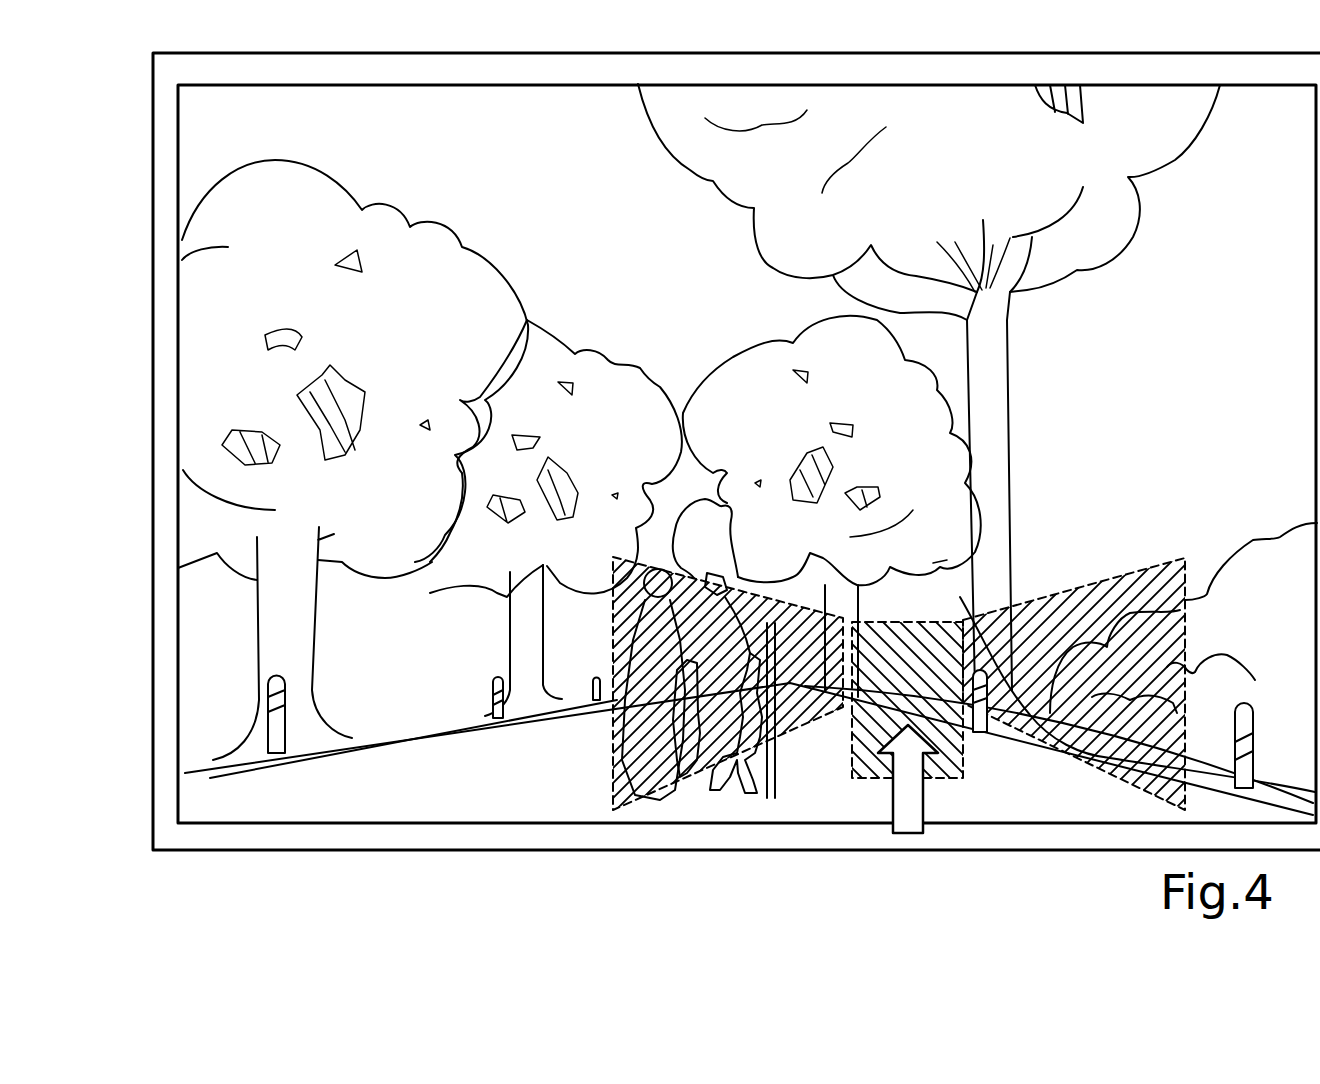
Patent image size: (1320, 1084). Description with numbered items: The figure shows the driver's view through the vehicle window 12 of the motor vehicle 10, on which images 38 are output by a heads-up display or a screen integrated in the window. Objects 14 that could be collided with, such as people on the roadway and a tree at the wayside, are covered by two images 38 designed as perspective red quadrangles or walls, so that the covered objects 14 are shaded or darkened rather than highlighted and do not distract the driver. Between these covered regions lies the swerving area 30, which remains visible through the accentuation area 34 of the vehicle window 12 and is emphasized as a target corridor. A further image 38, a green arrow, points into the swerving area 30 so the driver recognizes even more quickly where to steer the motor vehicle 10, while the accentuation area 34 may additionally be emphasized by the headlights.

The motor vehicle 10 is at (153, 495).
The vehicle window 12 is at (178, 628).
The object 14 is at (922, 198).
The swerving area 30 is at (905, 622).
The accentuation area 34 is at (937, 618).
The image 38 is at (613, 750).